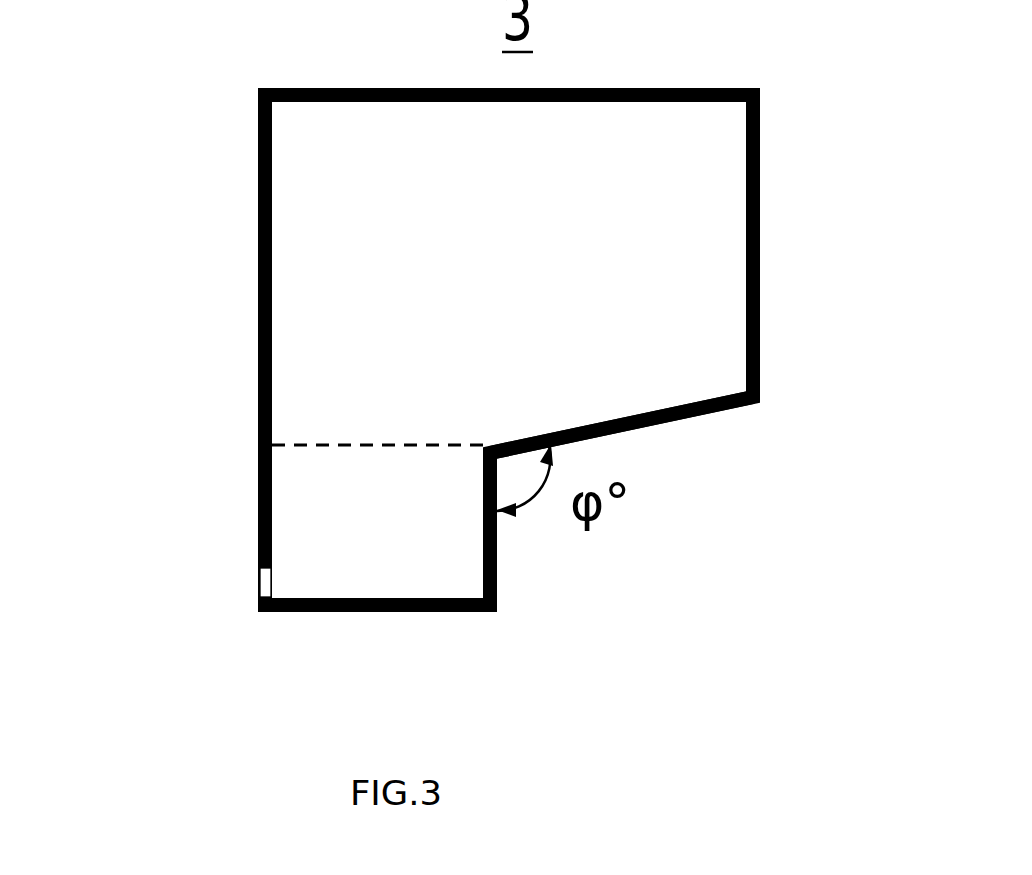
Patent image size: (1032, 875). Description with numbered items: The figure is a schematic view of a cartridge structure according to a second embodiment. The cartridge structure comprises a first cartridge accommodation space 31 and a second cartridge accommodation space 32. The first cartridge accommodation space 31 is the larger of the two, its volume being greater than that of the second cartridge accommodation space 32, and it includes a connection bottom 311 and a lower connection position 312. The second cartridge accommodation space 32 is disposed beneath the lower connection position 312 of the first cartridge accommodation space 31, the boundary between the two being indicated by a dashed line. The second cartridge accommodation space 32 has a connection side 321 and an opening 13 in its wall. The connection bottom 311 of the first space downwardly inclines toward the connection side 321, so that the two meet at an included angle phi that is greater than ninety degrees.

The first cartridge accommodation space 31 is at (680, 252).
The connection bottom 311 is at (658, 426).
The lower connection position 312 is at (379, 445).
The second cartridge accommodation space 32 is at (320, 535).
The connection side 321 is at (497, 573).
The opening 13 is at (258, 580).